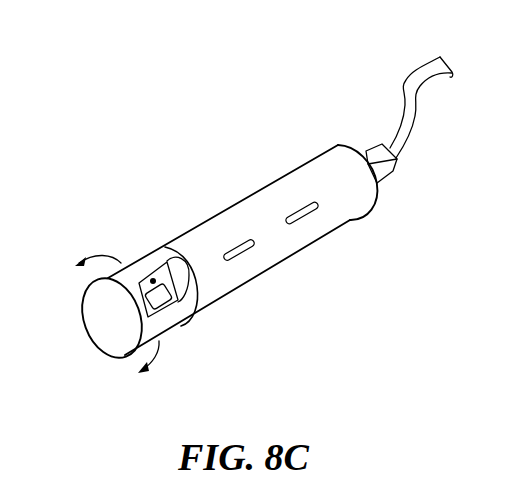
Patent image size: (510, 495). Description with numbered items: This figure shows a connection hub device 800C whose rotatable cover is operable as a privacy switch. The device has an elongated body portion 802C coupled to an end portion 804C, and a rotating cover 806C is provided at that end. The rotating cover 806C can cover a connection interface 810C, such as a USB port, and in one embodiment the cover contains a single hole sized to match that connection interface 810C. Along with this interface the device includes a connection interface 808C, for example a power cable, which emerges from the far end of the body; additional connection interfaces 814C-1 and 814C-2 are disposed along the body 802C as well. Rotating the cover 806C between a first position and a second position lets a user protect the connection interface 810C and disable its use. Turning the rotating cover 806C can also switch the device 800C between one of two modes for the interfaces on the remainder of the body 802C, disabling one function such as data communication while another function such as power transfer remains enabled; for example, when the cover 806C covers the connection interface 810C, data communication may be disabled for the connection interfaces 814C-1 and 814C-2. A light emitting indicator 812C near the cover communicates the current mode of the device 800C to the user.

The connection hub device 800C is at (196, 112).
The body portion 802C is at (265, 191).
The end portion 804C is at (107, 324).
The rotating cover 806C is at (170, 326).
The connection interface 808C is at (404, 96).
The connection interface 810C is at (162, 321).
The light emitting indicator 812C is at (153, 279).
The connection interface 814C-1 is at (247, 255).
The connection interface 814C-2 is at (308, 217).